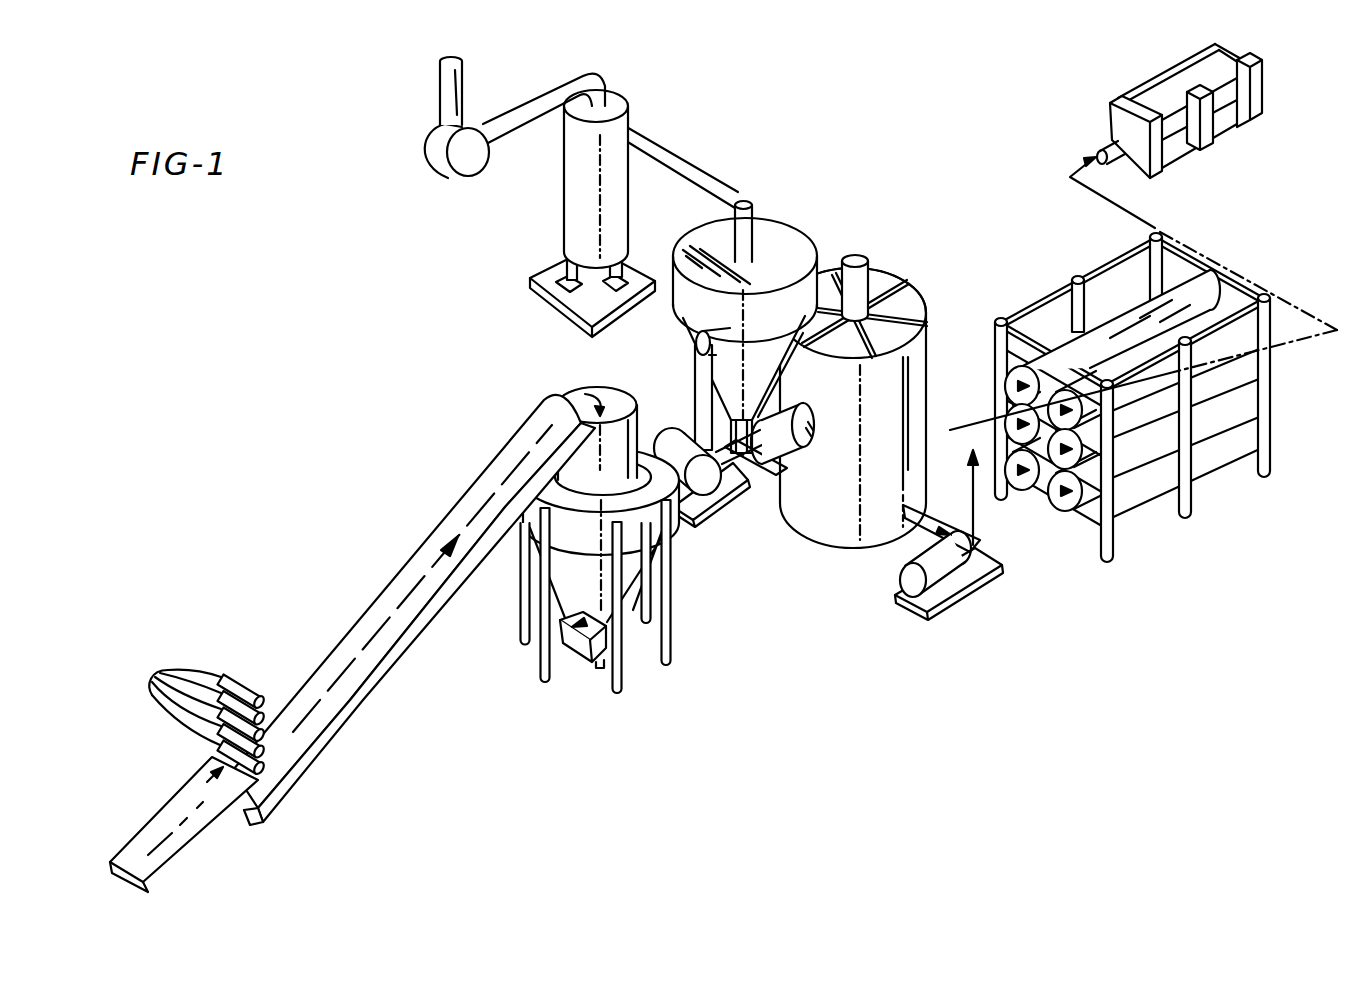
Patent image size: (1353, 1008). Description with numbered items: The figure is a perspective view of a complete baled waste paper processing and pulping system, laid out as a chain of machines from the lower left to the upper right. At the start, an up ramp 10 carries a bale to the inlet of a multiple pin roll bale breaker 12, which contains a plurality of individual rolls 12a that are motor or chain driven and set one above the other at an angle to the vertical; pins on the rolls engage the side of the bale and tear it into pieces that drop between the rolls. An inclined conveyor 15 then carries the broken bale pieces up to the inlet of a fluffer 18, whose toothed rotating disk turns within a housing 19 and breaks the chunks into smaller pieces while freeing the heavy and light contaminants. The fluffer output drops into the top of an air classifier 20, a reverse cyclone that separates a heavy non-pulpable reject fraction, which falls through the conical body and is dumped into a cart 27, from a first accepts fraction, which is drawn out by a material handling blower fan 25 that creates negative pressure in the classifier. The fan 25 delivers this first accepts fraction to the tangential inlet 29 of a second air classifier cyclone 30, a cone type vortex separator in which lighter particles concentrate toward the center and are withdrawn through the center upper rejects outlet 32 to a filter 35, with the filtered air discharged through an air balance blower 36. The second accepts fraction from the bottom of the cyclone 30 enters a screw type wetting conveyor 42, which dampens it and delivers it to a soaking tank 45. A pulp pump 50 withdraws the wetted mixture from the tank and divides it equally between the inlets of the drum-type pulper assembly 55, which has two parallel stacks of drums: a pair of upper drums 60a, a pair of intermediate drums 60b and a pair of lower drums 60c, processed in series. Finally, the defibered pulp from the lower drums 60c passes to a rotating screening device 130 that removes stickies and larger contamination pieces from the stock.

The up ramp 10 is at (191, 773).
The multiple pin roll bale breaker 12 is at (253, 686).
The individual rolls 12a is at (172, 675).
The inclined conveyor 15 is at (340, 713).
The fluffer 18 is at (609, 397).
The housing 19 is at (646, 430).
The air classifier 20 is at (563, 640).
The material handling blower fan 25 is at (706, 482).
The cart 27 is at (596, 672).
The tangential inlet 29 is at (672, 334).
The second air classifier cyclone 30 is at (818, 238).
The center upper rejects outlet 32 is at (770, 212).
The filter 35 is at (570, 158).
The air balance blower 36 is at (427, 165).
The screw type wetting conveyor 42 is at (792, 447).
The soaking tank 45 is at (826, 532).
The pulp pump 50 is at (950, 600).
The drum-type pulper assembly 55 is at (1079, 273).
The upper drums 60a is at (1008, 372).
The intermediate drums 60b is at (1008, 418).
The lower drums 60c is at (1018, 490).
The screening device 130 is at (1133, 88).